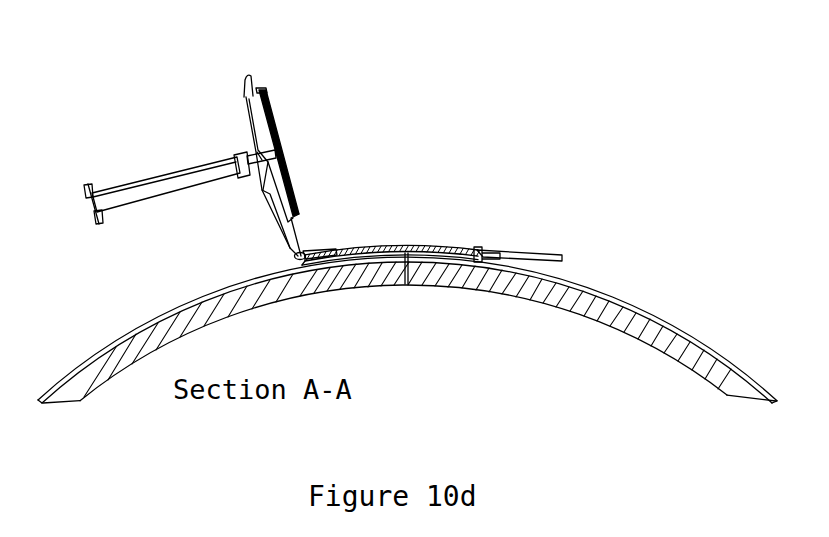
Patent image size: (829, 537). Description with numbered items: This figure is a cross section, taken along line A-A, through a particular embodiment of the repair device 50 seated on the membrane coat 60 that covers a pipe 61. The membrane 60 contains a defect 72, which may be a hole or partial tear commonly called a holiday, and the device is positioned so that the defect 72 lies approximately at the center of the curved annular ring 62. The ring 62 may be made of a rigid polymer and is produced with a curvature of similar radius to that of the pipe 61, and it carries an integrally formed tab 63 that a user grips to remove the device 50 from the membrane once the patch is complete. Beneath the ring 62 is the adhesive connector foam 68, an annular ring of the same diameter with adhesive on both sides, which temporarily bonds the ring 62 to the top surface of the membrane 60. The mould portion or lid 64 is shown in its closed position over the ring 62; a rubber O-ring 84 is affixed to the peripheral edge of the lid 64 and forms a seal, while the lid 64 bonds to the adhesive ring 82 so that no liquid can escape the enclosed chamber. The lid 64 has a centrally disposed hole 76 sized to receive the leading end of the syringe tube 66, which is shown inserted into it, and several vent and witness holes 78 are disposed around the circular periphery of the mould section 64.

The repair device 50 is at (243, 94).
The rubber O-ring 84 is at (266, 90).
The vent and witness holes 78 is at (273, 128).
The centrally disposed hole 76 is at (276, 147).
The mould portion 64 is at (287, 183).
The ring 62 is at (318, 251).
The adhesive ring 82 is at (385, 243).
The adhesive connector foam 68 is at (478, 251).
The tab 63 is at (532, 252).
The defect 72 is at (407, 286).
The membrane coat 60 is at (568, 310).
The pipe 61 is at (655, 337).
The syringe tube 66 is at (148, 178).